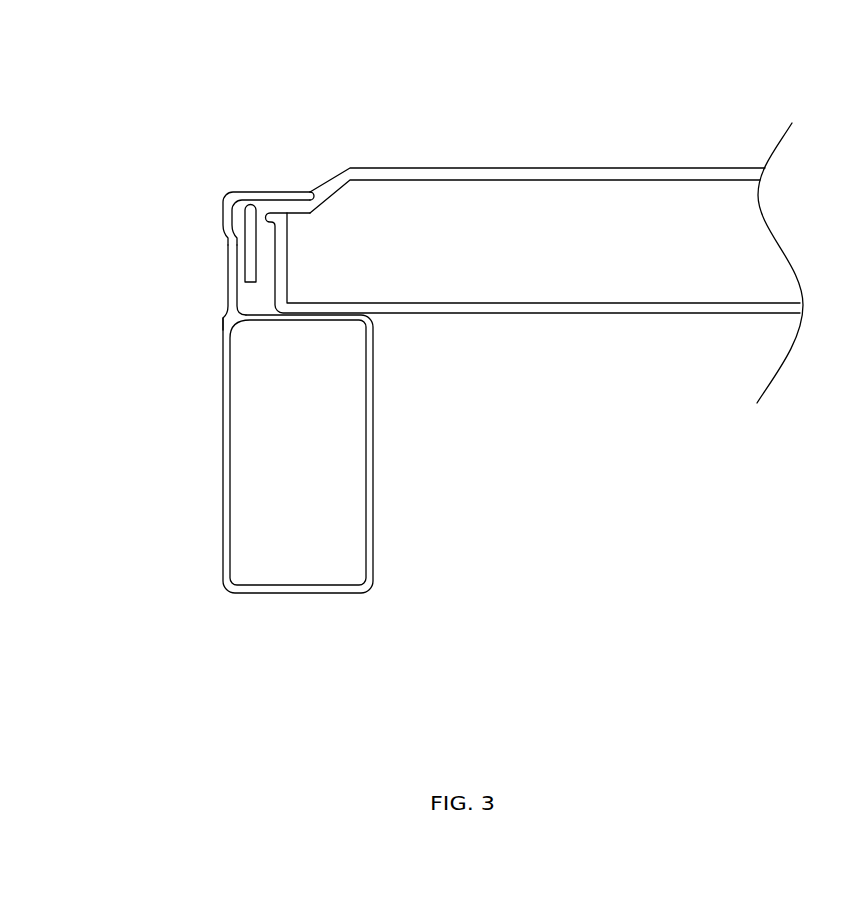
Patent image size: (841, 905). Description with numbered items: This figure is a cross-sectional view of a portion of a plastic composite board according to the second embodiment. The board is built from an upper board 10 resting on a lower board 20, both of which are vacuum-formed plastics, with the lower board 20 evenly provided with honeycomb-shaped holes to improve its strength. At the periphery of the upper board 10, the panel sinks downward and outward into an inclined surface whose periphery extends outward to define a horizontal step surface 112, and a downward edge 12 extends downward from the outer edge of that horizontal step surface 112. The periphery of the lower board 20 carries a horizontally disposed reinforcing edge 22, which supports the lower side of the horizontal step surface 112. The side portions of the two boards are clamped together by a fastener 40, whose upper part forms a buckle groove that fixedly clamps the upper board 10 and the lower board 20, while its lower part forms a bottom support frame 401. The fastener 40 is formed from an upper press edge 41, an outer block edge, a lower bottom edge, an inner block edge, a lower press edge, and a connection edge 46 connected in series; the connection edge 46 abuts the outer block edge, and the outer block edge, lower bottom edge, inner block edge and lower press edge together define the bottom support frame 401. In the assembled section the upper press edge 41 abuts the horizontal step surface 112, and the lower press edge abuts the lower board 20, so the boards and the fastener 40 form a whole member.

The upper board 10 is at (600, 168).
The horizontal step surface 112 is at (288, 210).
The downward edge 12 is at (252, 250).
The lower board 20 is at (675, 315).
The reinforcing edge 22 is at (263, 221).
The fastener 40 is at (222, 463).
The bottom support frame 401 is at (261, 503).
The upper press edge 41 is at (301, 193).
The connection edge 46 is at (310, 320).